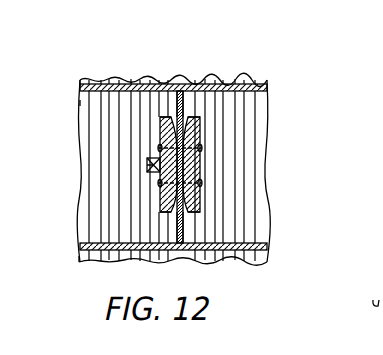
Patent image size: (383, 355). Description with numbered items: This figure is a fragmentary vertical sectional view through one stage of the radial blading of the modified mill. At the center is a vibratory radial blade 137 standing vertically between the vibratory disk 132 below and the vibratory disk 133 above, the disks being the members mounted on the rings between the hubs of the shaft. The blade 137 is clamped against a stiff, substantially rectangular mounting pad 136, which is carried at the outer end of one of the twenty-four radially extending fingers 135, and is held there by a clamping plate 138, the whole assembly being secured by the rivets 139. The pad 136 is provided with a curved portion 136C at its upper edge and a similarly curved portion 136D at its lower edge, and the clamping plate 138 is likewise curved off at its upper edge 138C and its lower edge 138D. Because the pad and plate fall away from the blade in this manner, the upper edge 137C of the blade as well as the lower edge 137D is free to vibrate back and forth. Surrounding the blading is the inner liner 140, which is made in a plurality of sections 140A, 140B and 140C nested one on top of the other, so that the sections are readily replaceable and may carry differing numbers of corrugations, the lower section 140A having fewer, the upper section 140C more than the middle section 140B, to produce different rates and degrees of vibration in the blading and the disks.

The vibratory disk 132 is at (57, 241).
The vibratory disk 133 is at (82, 86).
The radially extending fingers 135 is at (147, 164).
The mounting pad 136 is at (100, 164).
The curved portion 136C is at (163, 124).
The curved portion 136D is at (160, 199).
The vibratory radial blade 137 is at (185, 164).
The upper edge 137C is at (183, 98).
The lower edge 137D is at (196, 249).
The clamping plate 138 is at (258, 161).
The upper edge 138C is at (200, 126).
The lower edge 138D is at (200, 206).
The rivets 139 is at (200, 148).
The inner liner 140 is at (106, 74).
The lower liner section 140A is at (64, 270).
The middle liner section 140B is at (82, 103).
The upper liner section 140C is at (80, 80).